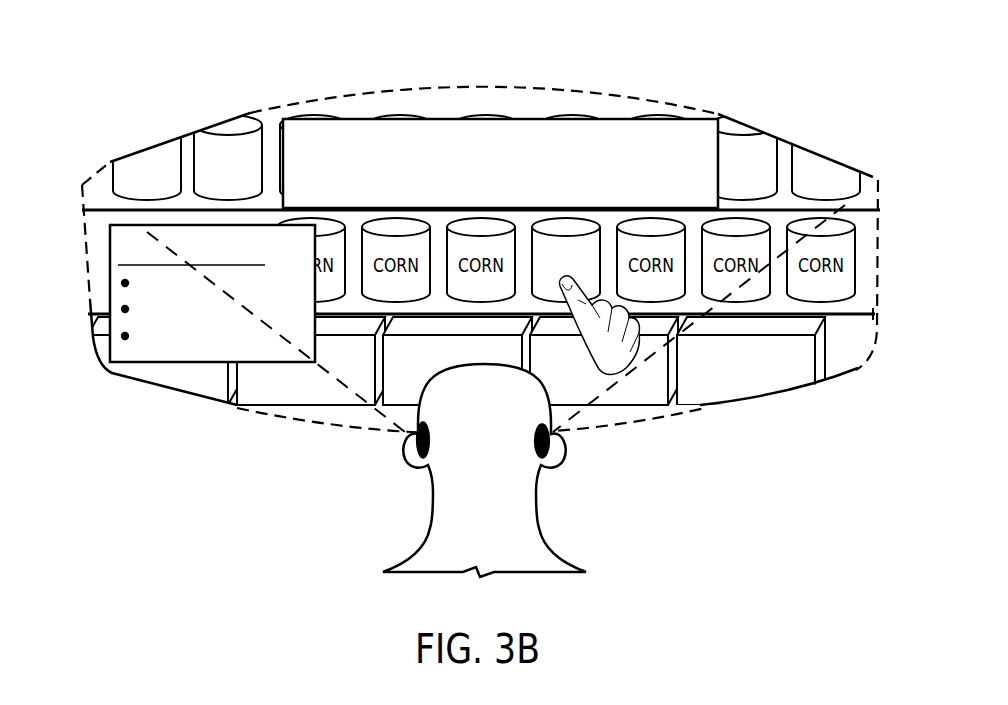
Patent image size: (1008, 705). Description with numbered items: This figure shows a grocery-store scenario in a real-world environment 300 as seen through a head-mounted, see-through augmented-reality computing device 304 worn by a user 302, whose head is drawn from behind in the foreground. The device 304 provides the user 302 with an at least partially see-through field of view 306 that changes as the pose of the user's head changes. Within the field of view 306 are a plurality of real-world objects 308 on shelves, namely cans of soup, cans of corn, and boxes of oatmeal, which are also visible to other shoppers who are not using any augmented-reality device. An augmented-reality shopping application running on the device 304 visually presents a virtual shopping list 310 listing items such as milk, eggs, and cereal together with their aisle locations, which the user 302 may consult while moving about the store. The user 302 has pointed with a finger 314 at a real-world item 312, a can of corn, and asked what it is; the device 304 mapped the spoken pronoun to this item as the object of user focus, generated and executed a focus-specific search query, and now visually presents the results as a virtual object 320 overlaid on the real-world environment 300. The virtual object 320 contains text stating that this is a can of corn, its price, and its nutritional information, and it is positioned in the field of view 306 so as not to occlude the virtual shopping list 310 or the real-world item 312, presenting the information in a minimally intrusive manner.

The real-world environment 300 is at (812, 36).
The user 302 is at (498, 479).
The augmented-reality computing device 304 is at (412, 436).
The field of view 306 is at (188, 400).
The real-world objects 308 is at (797, 128).
The virtual shopping list 310 is at (110, 294).
The real-world item 312 is at (592, 250).
The finger 314 is at (614, 372).
The virtual object 320 is at (423, 117).